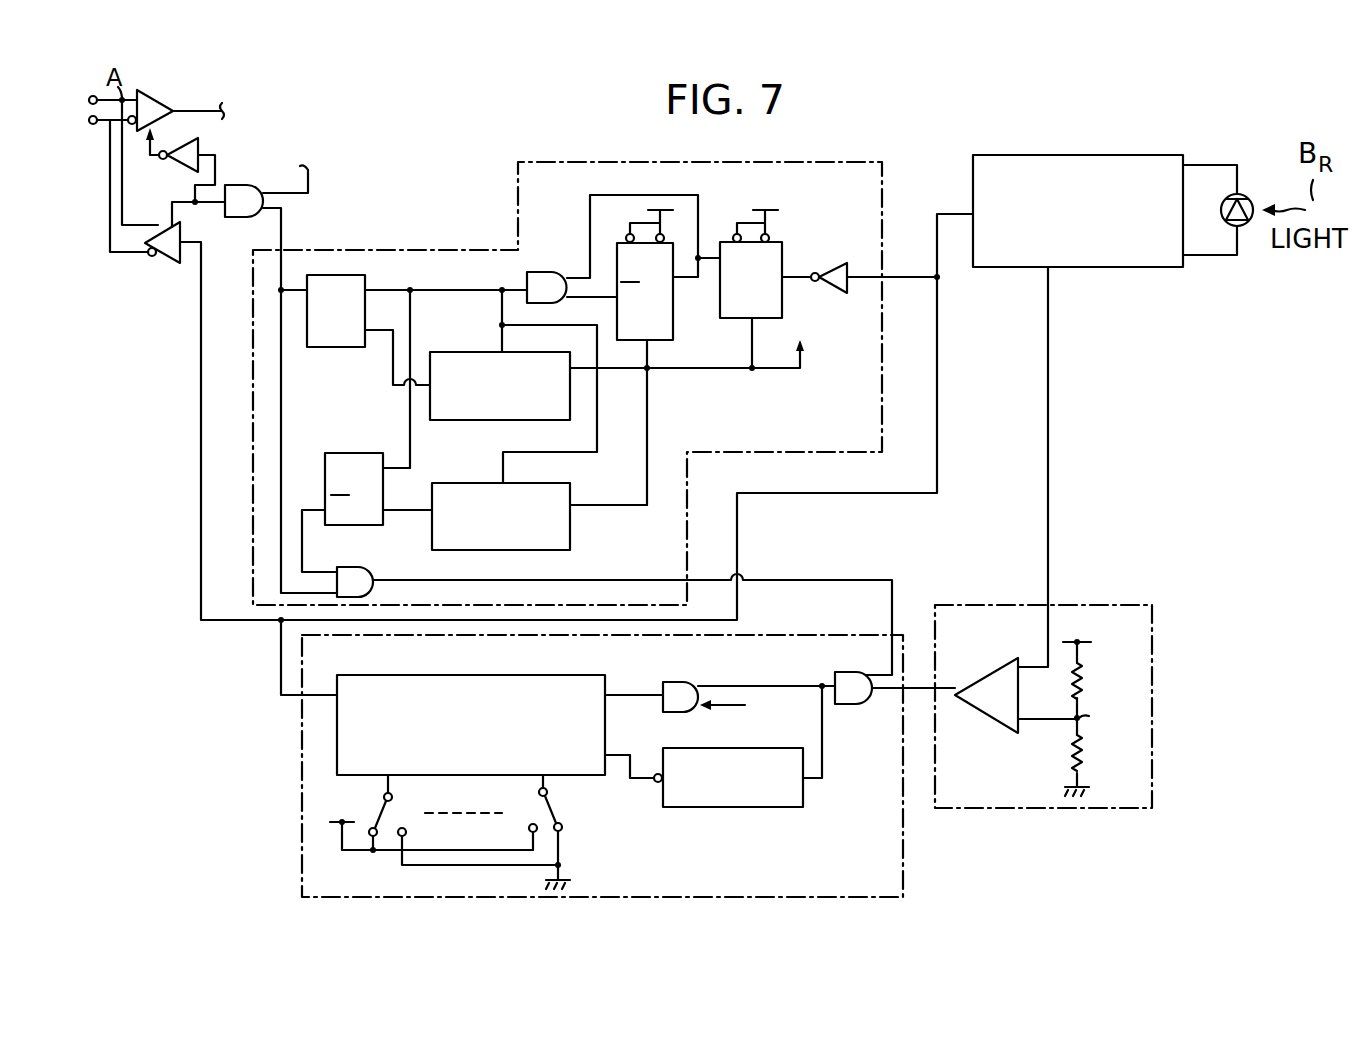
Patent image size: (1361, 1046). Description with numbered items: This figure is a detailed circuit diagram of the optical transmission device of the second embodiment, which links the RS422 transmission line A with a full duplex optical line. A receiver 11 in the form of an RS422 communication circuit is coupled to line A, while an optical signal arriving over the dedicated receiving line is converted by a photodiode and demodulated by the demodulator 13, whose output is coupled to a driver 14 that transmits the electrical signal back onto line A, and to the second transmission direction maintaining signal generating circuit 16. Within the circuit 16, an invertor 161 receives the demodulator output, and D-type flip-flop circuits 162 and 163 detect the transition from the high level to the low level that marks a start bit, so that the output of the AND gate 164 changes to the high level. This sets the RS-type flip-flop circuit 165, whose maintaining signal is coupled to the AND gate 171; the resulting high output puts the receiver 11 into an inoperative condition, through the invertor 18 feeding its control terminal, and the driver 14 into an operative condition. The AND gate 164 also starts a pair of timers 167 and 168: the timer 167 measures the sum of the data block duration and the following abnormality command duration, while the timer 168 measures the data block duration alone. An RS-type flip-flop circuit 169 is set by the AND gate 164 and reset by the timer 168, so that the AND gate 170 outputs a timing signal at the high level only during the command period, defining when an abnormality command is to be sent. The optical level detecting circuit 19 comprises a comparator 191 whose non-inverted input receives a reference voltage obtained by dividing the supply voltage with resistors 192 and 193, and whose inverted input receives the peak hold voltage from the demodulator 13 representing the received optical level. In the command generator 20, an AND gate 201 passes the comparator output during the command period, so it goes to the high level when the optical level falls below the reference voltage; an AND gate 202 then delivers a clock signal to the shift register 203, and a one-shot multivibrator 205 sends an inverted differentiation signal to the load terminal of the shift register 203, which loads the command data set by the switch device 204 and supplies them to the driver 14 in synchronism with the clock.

The receiver 11 is at (168, 80).
The demodulator 13 is at (977, 155).
The driver 14 is at (167, 263).
The second transmission direction maintaining signal generating circuit 16 is at (518, 162).
The invertor 18 is at (171, 172).
The optical level detecting circuit 19 is at (937, 604).
The command generator 20 is at (901, 630).
The invertor 161 is at (844, 263).
The D-type flip-flop circuit 162 is at (786, 240).
The D-type flip-flop circuit 163 is at (611, 242).
The AND gate 164 is at (546, 272).
The RS-type flip-flop circuit 165 is at (367, 276).
The timer 167 is at (431, 352).
The timer 168 is at (434, 483).
The RS-type flip-flop circuit 169 is at (325, 453).
The AND gate 170 is at (394, 562).
The AND gate 171 is at (247, 184).
The comparator 191 is at (982, 674).
The resistor 192 is at (1084, 672).
The resistor 193 is at (1084, 753).
The AND gate 201 is at (852, 670).
The AND gate 202 is at (672, 682).
The shift register 203 is at (340, 676).
The switch device 204 is at (558, 848).
The one-shot multivibrator 205 is at (687, 813).